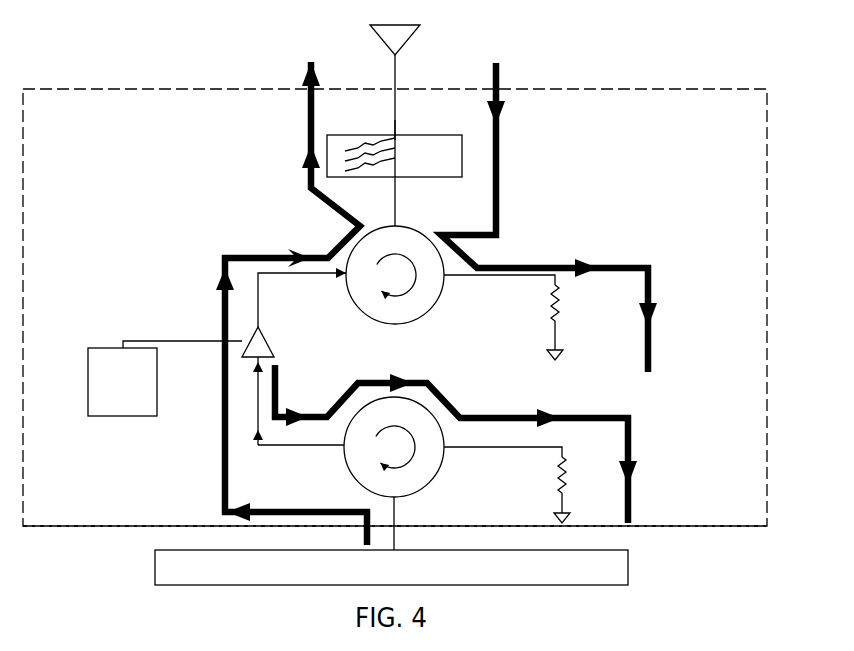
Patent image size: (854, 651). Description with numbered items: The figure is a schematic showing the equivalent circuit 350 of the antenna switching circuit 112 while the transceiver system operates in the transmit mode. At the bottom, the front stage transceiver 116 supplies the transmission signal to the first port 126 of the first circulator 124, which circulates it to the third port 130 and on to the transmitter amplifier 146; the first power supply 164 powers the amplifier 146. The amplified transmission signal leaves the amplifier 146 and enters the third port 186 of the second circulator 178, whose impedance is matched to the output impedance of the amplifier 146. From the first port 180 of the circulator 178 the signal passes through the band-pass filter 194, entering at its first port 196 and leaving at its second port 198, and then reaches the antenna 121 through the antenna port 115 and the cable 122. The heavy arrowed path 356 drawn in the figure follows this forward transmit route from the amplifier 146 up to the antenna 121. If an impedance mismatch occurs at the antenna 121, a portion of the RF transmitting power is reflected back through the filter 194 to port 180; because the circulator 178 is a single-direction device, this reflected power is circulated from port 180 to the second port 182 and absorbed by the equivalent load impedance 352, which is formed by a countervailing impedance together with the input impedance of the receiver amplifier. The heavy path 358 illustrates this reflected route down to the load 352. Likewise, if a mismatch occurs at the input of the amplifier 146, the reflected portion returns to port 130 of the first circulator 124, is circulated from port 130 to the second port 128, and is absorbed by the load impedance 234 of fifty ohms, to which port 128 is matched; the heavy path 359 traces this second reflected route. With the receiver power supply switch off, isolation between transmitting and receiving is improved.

The antenna switching circuit 112 is at (691, 528).
The antenna port 115 is at (395, 88).
The front stage transceiver 116 is at (545, 581).
The antenna 121 is at (386, 46).
The cable 122 is at (397, 72).
The first circulator 124 is at (319, 489).
The first port of first circulator 126 is at (396, 500).
The second port of first circulator 128 is at (447, 445).
The third port of first circulator 130 is at (343, 450).
The transmitter amplifier 146 is at (279, 338).
The first power supply 164 is at (138, 404).
The second circulator 178 is at (430, 340).
The first port of second circulator 180 is at (419, 283).
The second port of second circulator 182 is at (447, 278).
The third port of second circulator 186 is at (343, 280).
The band-pass filter 194 is at (453, 169).
The first port of band-pass filter 196 is at (395, 185).
The second port of band-pass filter 198 is at (395, 133).
The load impedance 234 is at (537, 489).
The equivalent circuit 350 is at (789, 82).
The equivalent load impedance 352 is at (576, 316).
The transmit signal path 356 is at (308, 118).
The reflected signal path 358 is at (499, 178).
The reflected signal path to load 359 is at (620, 416).